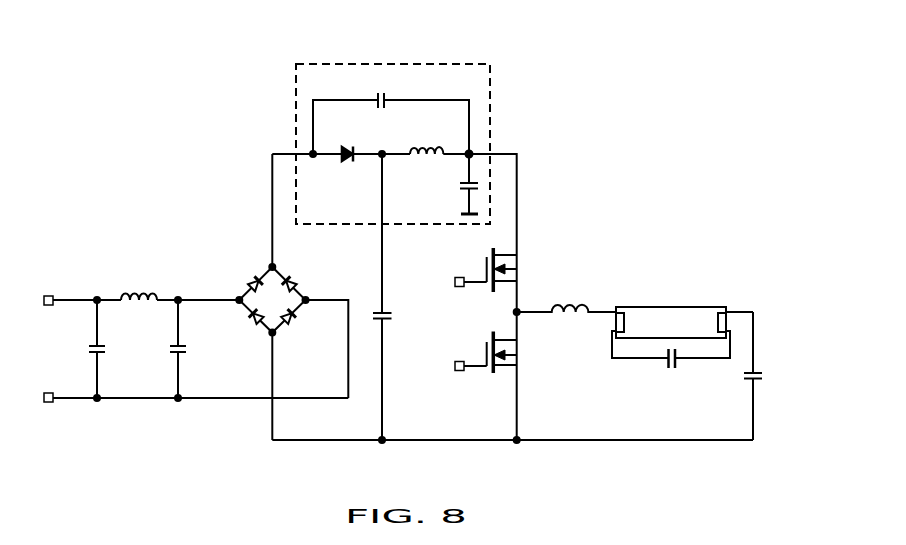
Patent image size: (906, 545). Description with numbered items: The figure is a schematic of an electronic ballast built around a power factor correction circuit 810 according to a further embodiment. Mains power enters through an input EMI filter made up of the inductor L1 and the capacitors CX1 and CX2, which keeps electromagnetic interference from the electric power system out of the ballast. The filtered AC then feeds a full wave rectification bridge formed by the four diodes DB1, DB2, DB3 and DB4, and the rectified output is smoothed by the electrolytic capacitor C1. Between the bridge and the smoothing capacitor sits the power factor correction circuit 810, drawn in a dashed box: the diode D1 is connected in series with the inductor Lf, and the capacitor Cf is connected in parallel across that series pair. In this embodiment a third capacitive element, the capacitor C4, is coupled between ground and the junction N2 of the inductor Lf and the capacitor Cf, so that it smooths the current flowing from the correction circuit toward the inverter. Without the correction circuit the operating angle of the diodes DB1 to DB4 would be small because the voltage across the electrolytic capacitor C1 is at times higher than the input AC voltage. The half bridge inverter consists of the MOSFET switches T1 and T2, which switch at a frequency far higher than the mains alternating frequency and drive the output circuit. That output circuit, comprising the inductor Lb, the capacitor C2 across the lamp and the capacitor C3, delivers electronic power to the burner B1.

The power factor correction circuit 810 is at (296, 84).
The capacitor Cf is at (391, 111).
The diode D1 is at (351, 143).
The inductor Lf is at (426, 139).
The junction N2 is at (469, 154).
The capacitor C4 is at (456, 184).
The inductor L1 is at (139, 286).
The capacitor CX1 is at (77, 349).
The capacitor CX2 is at (158, 349).
The diode DB1 is at (307, 273).
The diode DB2 is at (241, 325).
The diode DB3 is at (306, 325).
The diode DB4 is at (240, 273).
The electrolytic capacitor C1 is at (392, 297).
The MOSFET T1 is at (486, 267).
The MOSFET T2 is at (486, 350).
The inductor Lb is at (566, 296).
The burner B1 is at (682, 332).
The capacitor C2 is at (672, 370).
The capacitor C3 is at (768, 376).